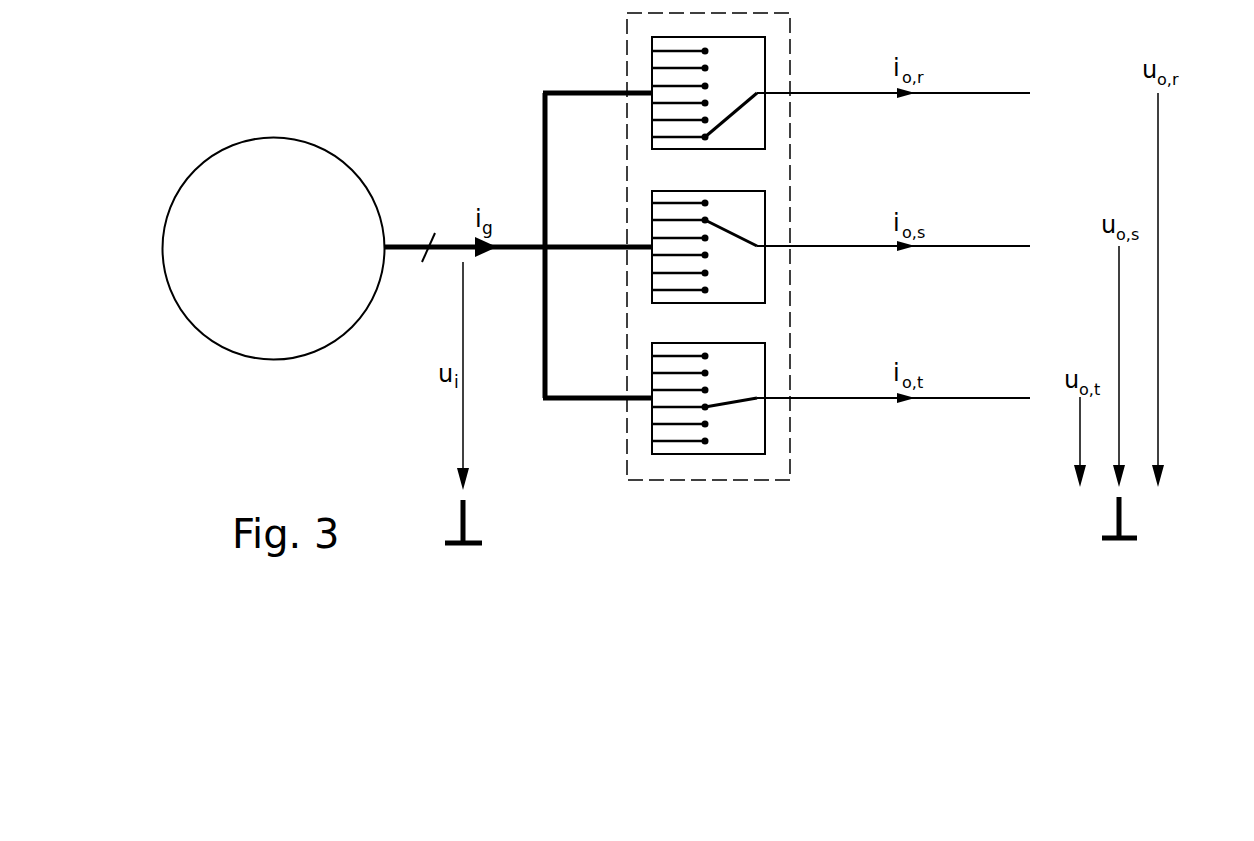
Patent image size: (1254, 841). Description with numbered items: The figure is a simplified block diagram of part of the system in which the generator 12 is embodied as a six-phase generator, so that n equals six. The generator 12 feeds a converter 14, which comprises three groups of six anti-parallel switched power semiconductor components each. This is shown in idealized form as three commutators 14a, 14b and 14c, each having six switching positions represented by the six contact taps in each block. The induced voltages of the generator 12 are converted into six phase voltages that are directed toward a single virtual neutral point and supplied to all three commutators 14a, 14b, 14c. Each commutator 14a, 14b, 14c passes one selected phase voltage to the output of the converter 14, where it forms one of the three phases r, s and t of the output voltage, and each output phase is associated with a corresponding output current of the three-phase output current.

The generator 12 is at (273, 338).
The converter 14 is at (693, 480).
The commutator 14a is at (750, 130).
The commutator 14b is at (750, 280).
The commutator 14c is at (750, 432).